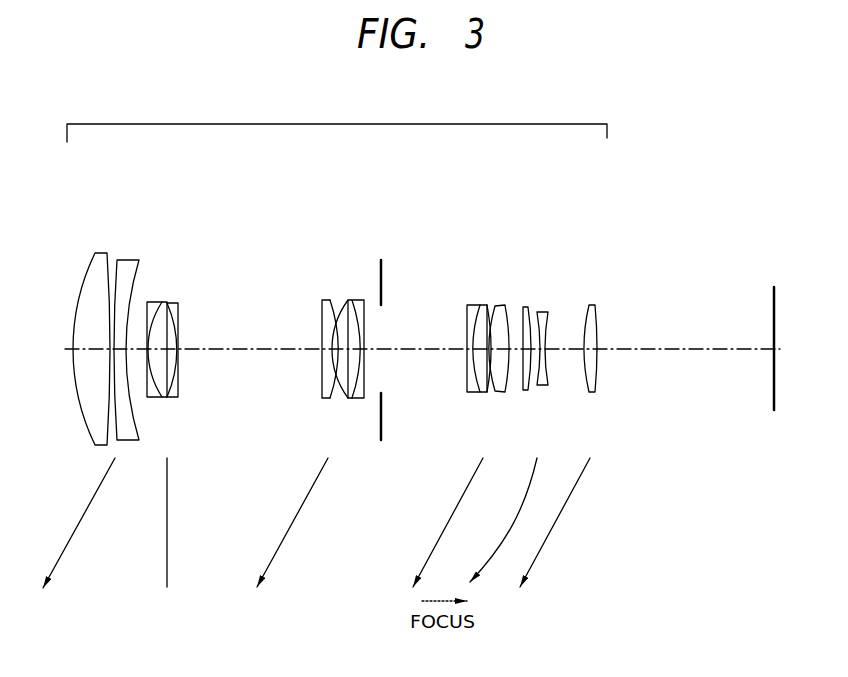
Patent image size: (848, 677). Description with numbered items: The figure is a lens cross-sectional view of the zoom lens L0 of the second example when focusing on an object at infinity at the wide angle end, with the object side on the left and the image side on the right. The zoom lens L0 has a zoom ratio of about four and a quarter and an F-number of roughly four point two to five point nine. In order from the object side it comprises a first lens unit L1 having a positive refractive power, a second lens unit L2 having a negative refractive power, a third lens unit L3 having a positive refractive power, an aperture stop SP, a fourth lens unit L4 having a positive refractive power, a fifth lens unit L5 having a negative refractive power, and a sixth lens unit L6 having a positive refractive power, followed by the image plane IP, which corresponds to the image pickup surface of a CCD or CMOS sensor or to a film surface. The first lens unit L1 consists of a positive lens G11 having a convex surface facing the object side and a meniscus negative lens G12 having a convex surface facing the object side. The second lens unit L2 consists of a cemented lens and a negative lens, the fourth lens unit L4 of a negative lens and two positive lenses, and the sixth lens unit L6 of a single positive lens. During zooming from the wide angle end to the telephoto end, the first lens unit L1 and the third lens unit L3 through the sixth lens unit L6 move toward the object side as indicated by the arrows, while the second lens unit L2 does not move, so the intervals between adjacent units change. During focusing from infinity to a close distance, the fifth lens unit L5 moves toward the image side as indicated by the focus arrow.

The zoom lens L0 is at (408, 343).
The first lens unit L1 is at (145, 188).
The second lens unit L2 is at (202, 205).
The third lens unit L3 is at (384, 203).
The fourth lens unit L4 is at (513, 203).
The fifth lens unit L5 is at (558, 203).
The sixth lens unit L6 is at (608, 203).
The positive lens G11 is at (101, 253).
The meniscus negative lens G12 is at (130, 259).
The aperture stop SP is at (386, 262).
The image plane IP is at (772, 292).